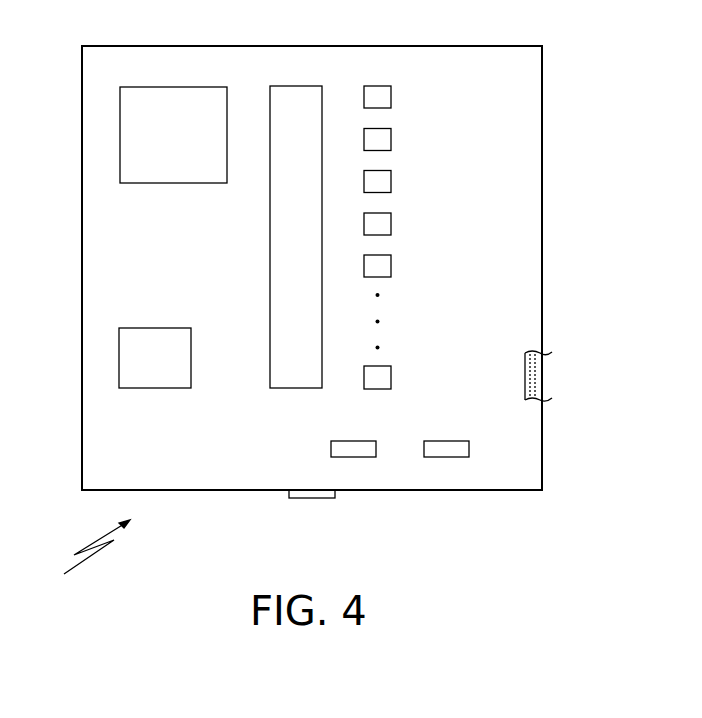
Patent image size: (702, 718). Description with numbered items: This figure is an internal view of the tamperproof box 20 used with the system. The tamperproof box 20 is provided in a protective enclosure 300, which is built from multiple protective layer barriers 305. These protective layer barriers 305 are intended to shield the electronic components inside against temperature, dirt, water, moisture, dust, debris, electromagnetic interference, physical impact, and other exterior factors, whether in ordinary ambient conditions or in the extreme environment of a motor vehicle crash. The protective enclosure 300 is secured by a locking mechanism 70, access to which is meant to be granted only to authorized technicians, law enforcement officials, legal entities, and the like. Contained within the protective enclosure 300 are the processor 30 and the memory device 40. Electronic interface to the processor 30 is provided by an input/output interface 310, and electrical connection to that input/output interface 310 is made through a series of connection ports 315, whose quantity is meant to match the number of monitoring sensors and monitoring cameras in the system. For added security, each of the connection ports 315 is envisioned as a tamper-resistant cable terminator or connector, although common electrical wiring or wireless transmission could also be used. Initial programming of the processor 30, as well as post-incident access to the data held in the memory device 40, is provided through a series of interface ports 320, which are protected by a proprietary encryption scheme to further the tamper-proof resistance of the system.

The tamperproof box 20 is at (85, 556).
The processor 30 is at (160, 86).
The memory device 40 is at (119, 365).
The locking mechanism 70 is at (310, 499).
The protective enclosure 300 is at (543, 68).
The protective layer barriers 305 is at (543, 377).
The input/output interface 310 is at (296, 86).
The connection ports 315 is at (383, 86).
The interface ports 320 is at (351, 457).